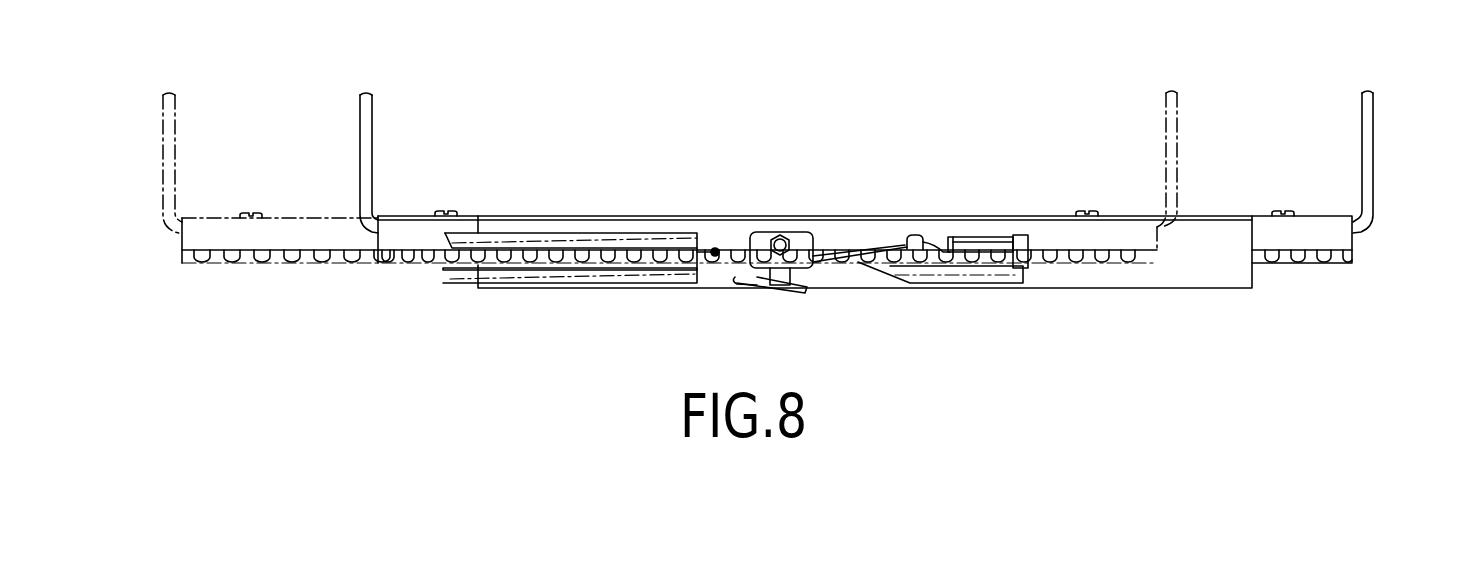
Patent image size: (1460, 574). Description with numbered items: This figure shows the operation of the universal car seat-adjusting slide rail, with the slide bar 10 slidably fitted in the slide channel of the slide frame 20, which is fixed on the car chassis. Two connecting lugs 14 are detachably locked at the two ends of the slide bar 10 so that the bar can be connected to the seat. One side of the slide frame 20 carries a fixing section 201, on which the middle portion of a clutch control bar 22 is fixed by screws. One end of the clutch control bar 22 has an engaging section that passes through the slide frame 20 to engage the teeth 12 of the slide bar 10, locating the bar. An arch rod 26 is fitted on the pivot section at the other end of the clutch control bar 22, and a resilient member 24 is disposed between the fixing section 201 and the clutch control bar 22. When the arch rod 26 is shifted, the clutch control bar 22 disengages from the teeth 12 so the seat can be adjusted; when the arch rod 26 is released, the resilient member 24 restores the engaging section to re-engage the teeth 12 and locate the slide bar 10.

The slide bar 10 is at (1353, 240).
The teeth 12 is at (1299, 263).
The connecting lug 14 is at (368, 152).
The slide frame 20 is at (998, 218).
The clutch control bar 22 is at (882, 238).
The resilient member 24 is at (828, 272).
The arch rod 26 is at (534, 236).
The fixing section 201 is at (796, 239).